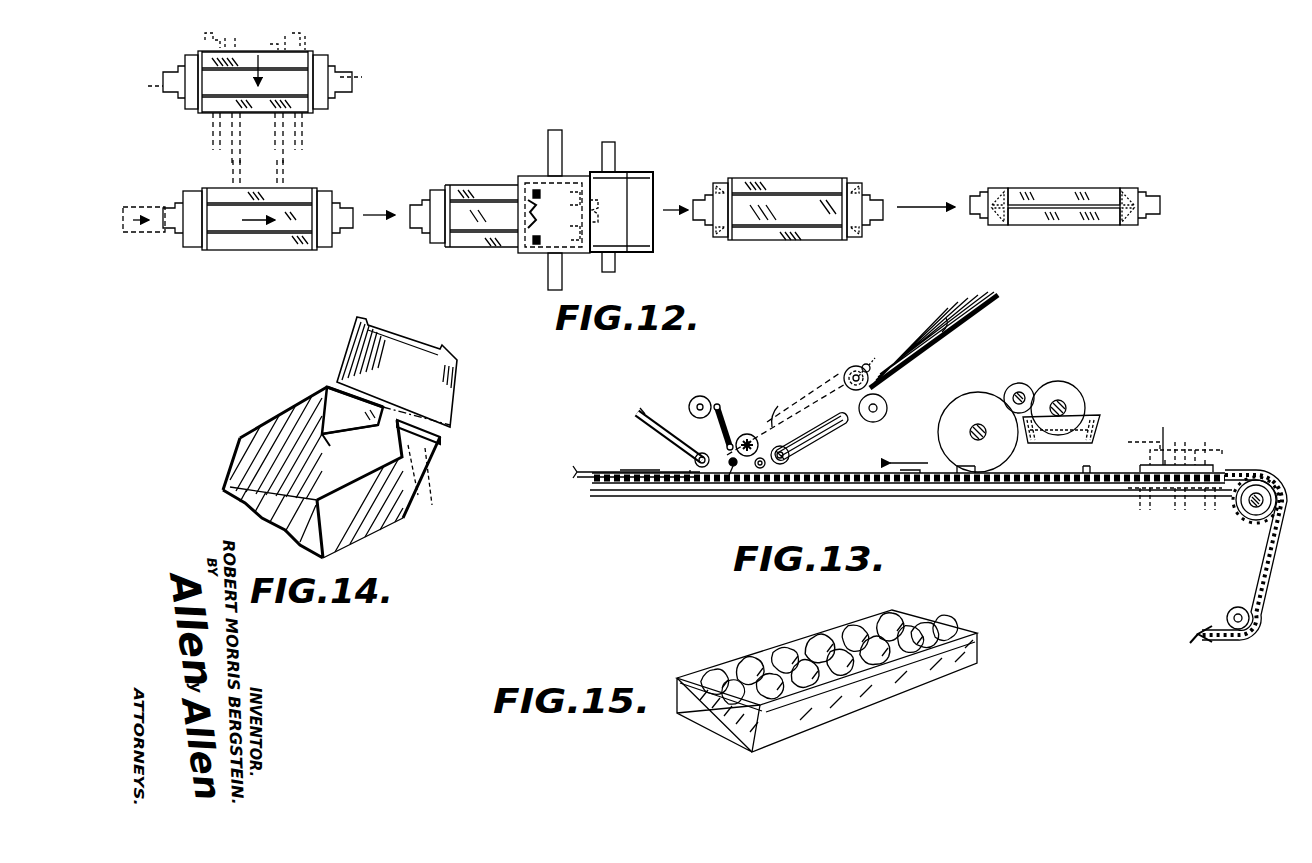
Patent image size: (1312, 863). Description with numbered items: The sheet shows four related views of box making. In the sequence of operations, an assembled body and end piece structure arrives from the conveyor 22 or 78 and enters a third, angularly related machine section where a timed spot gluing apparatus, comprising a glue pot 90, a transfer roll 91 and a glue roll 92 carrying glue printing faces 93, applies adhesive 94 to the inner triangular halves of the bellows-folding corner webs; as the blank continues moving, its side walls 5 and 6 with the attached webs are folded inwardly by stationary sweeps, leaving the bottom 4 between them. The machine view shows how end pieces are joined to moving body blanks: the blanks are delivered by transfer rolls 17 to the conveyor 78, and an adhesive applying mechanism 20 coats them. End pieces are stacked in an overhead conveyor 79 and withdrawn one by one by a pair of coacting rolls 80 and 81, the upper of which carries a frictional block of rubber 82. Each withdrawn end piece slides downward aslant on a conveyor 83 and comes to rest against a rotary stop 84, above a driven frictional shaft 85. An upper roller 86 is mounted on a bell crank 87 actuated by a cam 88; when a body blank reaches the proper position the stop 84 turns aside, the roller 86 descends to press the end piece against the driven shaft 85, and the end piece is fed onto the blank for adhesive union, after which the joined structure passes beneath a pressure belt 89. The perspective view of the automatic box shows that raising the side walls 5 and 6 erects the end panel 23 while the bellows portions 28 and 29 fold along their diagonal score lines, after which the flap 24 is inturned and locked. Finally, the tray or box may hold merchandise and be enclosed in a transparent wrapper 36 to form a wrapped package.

In FIG. 12, the bottom 4 is at (255, 73).
In FIG. 14, the bottom 4 is at (277, 512).
In FIG. 12, the side wall 5 is at (298, 56).
In FIG. 14, the side wall 5 is at (277, 432).
In FIG. 12, the side wall 6 is at (267, 113).
In FIG. 14, the side wall 6 is at (353, 522).
In FIG. 12, the conveyor 22 is at (302, 136).
In FIG. 12, the conveyor 78 is at (258, 172).
In FIG. 13, the conveyor 78 is at (1092, 497).
In FIG. 12, the glue pot 90 is at (634, 172).
In FIG. 12, the transfer roll 91 is at (596, 268).
In FIG. 12, the glue roll 92 is at (533, 260).
In FIG. 12, the glue printing faces 93 is at (553, 215).
In FIG. 12, the adhesive 94 is at (856, 190).
In FIG. 14, the flap 24 is at (397, 372).
In FIG. 14, the bellows portion 28 is at (352, 410).
In FIG. 14, the end panel 23 is at (359, 441).
In FIG. 14, the bellows portion 29 is at (452, 447).
In FIG. 13, the cam 88 is at (697, 396).
In FIG. 13, the upper roller 86 is at (750, 422).
In FIG. 13, the bell crank 87 is at (714, 428).
In FIG. 13, the belt 89 is at (613, 470).
In FIG. 13, the rotary stop 84 is at (724, 482).
In FIG. 13, the driven frictional shaft 85 is at (791, 460).
In FIG. 13, the conveyor 83 is at (823, 444).
In FIG. 13, the roll 80 is at (847, 368).
In FIG. 13, the block of rubber 82 is at (862, 366).
In FIG. 13, the roll 81 is at (882, 418).
In FIG. 13, the overhead conveyor 79 is at (928, 368).
In FIG. 13, the adhesive applying mechanism 20 is at (980, 395).
In FIG. 13, the transfer rolls 17 is at (1200, 443).
In FIG. 15, the transparent wrapper 36 is at (937, 623).